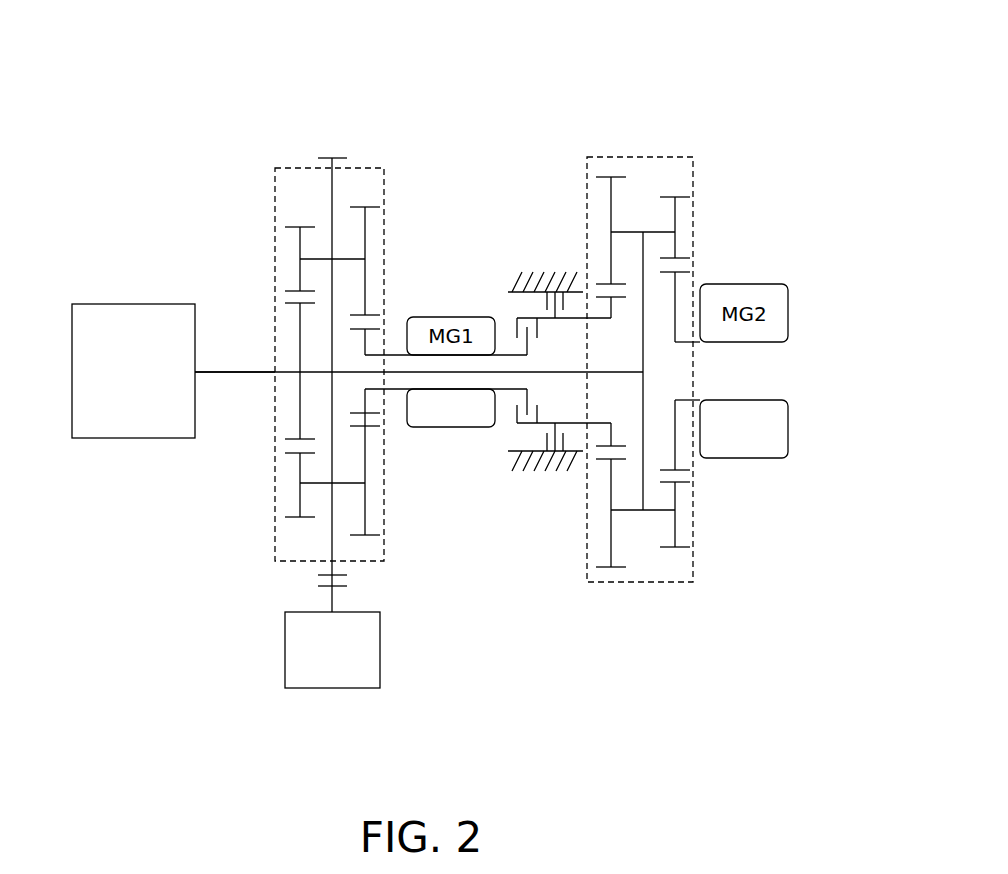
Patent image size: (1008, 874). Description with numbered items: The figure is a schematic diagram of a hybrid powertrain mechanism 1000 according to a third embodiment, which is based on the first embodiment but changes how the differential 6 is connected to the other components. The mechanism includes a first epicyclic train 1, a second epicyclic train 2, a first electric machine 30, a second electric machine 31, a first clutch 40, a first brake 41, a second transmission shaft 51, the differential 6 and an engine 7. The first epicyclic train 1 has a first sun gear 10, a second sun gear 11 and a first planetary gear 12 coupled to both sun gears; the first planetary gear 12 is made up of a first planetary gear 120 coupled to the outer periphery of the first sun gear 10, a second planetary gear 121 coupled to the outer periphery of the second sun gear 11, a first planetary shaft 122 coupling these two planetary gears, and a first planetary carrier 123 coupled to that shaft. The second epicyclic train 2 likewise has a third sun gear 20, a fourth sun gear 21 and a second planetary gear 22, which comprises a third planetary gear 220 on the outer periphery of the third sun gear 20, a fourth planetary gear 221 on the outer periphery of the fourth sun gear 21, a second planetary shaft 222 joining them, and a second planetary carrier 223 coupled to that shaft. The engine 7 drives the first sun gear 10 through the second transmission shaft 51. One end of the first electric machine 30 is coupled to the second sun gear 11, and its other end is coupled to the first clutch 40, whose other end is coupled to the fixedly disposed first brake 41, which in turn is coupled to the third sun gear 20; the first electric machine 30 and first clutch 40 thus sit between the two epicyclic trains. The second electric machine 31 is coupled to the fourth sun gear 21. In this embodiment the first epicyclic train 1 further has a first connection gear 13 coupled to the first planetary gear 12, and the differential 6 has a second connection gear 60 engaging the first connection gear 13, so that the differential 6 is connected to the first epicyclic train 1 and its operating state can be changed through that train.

The hybrid powertrain mechanism 1000 is at (808, 66).
The first epicyclic train 1 is at (282, 563).
The first planetary gear 12 is at (435, 112).
The first planetary gear 120 is at (300, 243).
The second planetary gear 121 is at (366, 225).
The first planetary shaft 122 is at (320, 257).
The first planetary carrier 123 is at (337, 257).
The first sun gear 10 is at (299, 333).
The second sun gear 11 is at (365, 341).
The first connection gear 13 is at (332, 545).
The second connection gear 60 is at (332, 596).
The differential 6 is at (324, 700).
The engine 7 is at (126, 450).
The second transmission shaft 51 is at (226, 378).
The first electric machine 30 is at (450, 437).
The first clutch 40 is at (512, 316).
The first brake 41 is at (581, 288).
The third sun gear 20 is at (611, 433).
The fourth sun gear 21 is at (676, 460).
The second epicyclic train 2 is at (640, 584).
The second planetary gear 22 is at (548, 100).
The third planetary gear 220 is at (611, 200).
The fourth planetary gear 221 is at (676, 210).
The second planetary shaft 222 is at (629, 232).
The second planetary carrier 223 is at (650, 237).
The second electric machine 31 is at (750, 470).